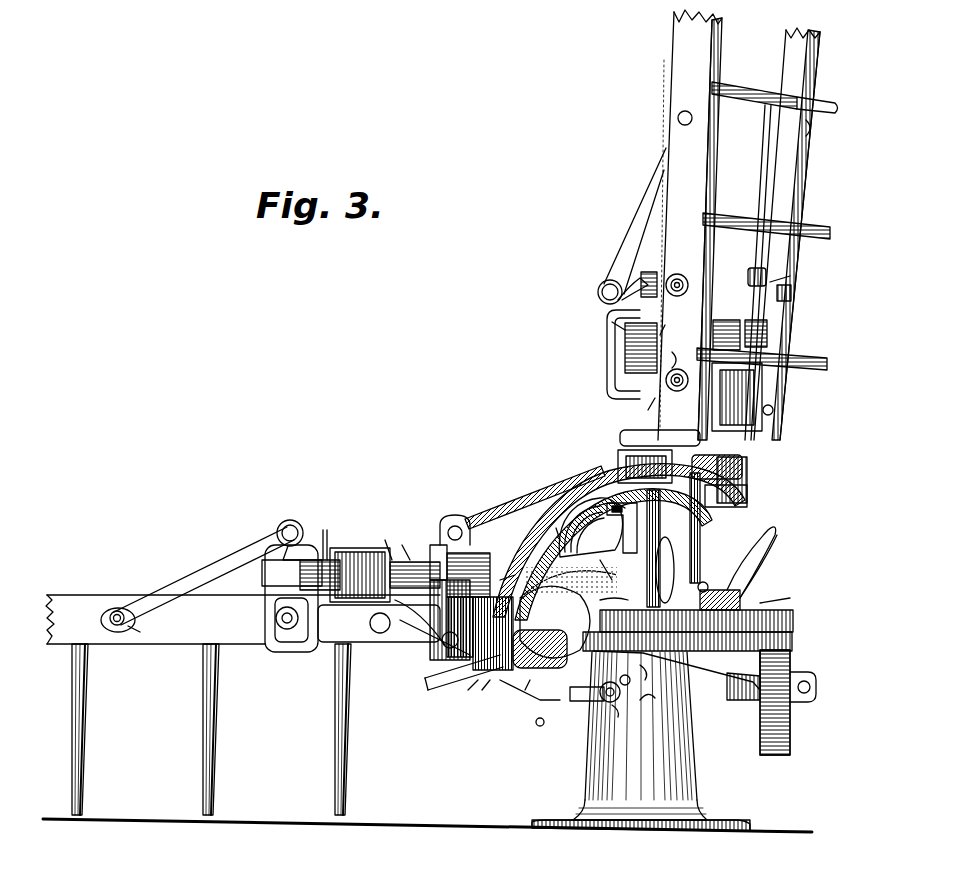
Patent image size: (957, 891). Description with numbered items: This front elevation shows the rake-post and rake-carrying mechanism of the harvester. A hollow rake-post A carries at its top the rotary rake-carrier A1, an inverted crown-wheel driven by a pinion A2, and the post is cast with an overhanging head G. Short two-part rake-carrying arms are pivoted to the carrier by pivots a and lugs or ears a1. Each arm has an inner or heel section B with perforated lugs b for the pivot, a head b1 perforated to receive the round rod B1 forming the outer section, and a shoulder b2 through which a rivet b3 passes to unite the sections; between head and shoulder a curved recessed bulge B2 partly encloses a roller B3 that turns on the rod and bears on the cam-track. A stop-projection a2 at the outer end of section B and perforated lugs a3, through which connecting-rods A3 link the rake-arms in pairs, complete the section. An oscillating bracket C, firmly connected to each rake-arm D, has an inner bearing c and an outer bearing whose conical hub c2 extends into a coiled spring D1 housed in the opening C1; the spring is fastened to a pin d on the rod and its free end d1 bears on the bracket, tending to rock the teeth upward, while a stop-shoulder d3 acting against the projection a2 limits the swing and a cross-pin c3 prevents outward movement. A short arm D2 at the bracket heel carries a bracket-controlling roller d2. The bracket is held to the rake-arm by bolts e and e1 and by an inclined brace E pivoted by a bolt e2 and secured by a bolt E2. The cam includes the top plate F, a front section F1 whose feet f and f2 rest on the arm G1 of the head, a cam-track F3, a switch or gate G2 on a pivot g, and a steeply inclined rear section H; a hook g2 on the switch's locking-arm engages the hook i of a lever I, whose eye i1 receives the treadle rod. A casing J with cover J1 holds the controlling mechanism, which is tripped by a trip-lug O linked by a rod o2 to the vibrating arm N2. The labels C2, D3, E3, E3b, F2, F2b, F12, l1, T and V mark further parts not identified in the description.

The rake-post A is at (641, 741).
The rotary rake-carrier A1 is at (778, 592).
The pinion A2 is at (772, 750).
The connecting-rods A3 is at (532, 505).
The inner or heel section B is at (619, 542).
The round rod B1 is at (282, 573).
The recessed lateral bulge B2 is at (468, 568).
The roller B3 is at (756, 486).
The perforated lugs b is at (637, 570).
The head b1 is at (622, 528).
The shoulder b2 is at (751, 562).
The rivet b3 is at (655, 527).
The oscillating bracket C is at (372, 548).
The opening C1 is at (538, 436).
The clamp screw C2 is at (405, 542).
The inner bearing-perforation c is at (561, 498).
The conical hub c2 is at (728, 322).
The cross-pin c3 is at (532, 410).
The rake-arm D is at (243, 705).
The coiled spring D1 is at (794, 338).
The short arm D2 is at (435, 636).
The vertical bars D3 is at (739, 225).
The pin d is at (568, 473).
The free end of spring d1 is at (532, 436).
The bracket-controlling roller d2 is at (742, 467).
The stop-shoulder d3 is at (420, 620).
The inclined brace E is at (222, 578).
The bolt E2 is at (648, 190).
The rungs E3 is at (757, 184).
The block E3b is at (466, 611).
The bolt e is at (548, 494).
The bolt e1 is at (545, 446).
The bolt e2 is at (600, 292).
The top plate F is at (590, 527).
The front cam-section F1 is at (106, 618).
The pivot lug F2 is at (141, 634).
The drum F2b is at (540, 649).
The cam-track F3 is at (747, 503).
The pivot F12 is at (817, 128).
The foot f is at (647, 668).
The second foot f2 is at (647, 702).
The head of rake-post G is at (676, 674).
The forwardly-extending arm G1 is at (687, 642).
The cam-switch G2 is at (461, 672).
The pivot g is at (507, 573).
The hook g2 is at (484, 693).
The rear cam-section H is at (798, 552).
The lever I is at (528, 702).
The hook i is at (470, 694).
The eye i1 is at (548, 635).
The casing J is at (568, 573).
The face plate J1 is at (555, 620).
The lever l1 is at (525, 692).
The vibrating arm N2 is at (614, 601).
The trip-lug O is at (481, 650).
The rod o2 is at (631, 676).
The counter T is at (620, 716).
The register V is at (590, 703).
The pivot a is at (696, 607).
The lugs or ears a1 is at (711, 619).
The stop-projection a2 is at (436, 556).
The perforated lugs a3 is at (459, 523).